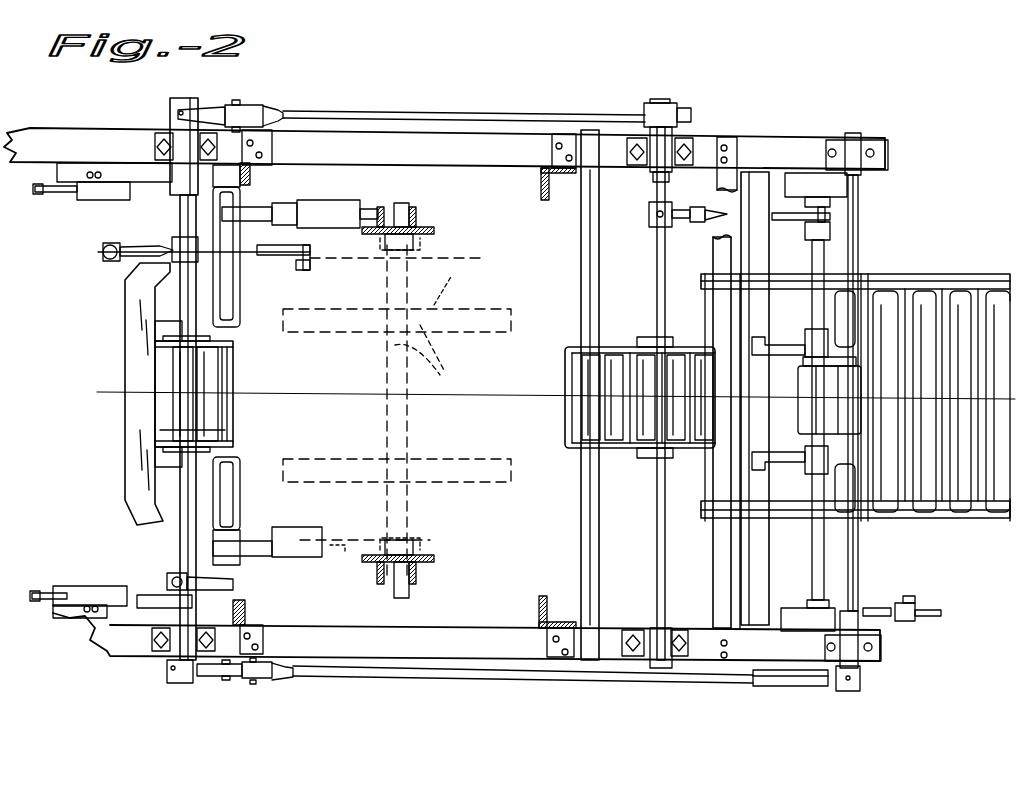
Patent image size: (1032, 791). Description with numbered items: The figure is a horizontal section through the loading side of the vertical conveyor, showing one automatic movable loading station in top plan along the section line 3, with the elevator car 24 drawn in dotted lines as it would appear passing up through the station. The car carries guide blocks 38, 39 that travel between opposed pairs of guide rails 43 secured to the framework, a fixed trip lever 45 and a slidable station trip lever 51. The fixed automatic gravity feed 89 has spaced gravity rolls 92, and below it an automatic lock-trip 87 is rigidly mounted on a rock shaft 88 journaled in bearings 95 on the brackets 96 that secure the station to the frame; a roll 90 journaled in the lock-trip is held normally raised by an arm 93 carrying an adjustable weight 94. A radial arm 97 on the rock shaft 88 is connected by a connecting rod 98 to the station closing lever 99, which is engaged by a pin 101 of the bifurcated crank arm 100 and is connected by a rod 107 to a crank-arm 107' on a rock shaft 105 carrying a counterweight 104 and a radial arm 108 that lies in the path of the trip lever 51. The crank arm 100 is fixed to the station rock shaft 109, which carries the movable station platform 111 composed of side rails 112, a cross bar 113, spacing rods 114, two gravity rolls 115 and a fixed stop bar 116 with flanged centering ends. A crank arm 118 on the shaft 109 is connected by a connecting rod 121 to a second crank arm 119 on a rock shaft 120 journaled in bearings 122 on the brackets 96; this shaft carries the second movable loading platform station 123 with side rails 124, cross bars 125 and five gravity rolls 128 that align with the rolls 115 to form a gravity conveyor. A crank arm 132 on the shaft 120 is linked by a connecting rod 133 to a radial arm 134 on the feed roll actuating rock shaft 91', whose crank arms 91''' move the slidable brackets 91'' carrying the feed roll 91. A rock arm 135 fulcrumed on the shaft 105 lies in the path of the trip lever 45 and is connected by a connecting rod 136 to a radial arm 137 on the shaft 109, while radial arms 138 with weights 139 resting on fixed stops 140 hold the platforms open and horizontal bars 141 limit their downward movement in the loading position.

The section line 3 is at (547, 394).
The elevator car 24 is at (432, 357).
The guide block 38 is at (422, 243).
The guide block 39 is at (422, 549).
The guide rails 43 is at (404, 222).
The fixed trip lever 45 is at (441, 290).
The station trip lever 51 is at (340, 552).
The automatic lock-trip 87 is at (855, 278).
The rock shaft 88 is at (856, 545).
The fixed automatic gravity feed 89 is at (920, 290).
The roll 90 is at (805, 397).
The feed roll 91 is at (816, 393).
The feed roll actuating rock shaft 91' is at (802, 435).
The slidable spaced brackets 91'' is at (778, 401).
The crank arms 91''' is at (800, 402).
The gravity rolls 92 is at (705, 492).
The arm 93 is at (930, 609).
The weight 94 is at (898, 603).
The bearings 95 is at (863, 132).
The brackets 96 is at (779, 140).
The radial arm 97 is at (840, 690).
The connecting rod 98 is at (622, 683).
The station closing lever 99 is at (255, 680).
The bifurcated crank arm 100 is at (178, 683).
The pin 101 is at (225, 680).
The counterweight 104 is at (323, 210).
The rock shaft 105 is at (240, 492).
The rod 107 is at (158, 577).
The crank-arm 107' is at (213, 588).
The radial arm 108 is at (290, 524).
The rock shaft 109 is at (180, 545).
The movable station platform 111 is at (185, 385).
The side rails 112 is at (212, 339).
The cross bar 113 is at (233, 412).
The spacing rods 114 is at (167, 414).
The gravity rolls 115 is at (200, 433).
The fixed stop bar 116 is at (125, 348).
The crank arm 118 is at (205, 112).
The second crank arm 119 is at (644, 103).
The rock shaft 120 is at (657, 276).
The connecting rod 121 is at (446, 111).
The bearings 122 is at (672, 148).
The second movable loading platform station 123 is at (610, 412).
The side rails 124 is at (626, 347).
The cross bars 125 is at (564, 384).
The gravity rolls 128 is at (690, 448).
The crank arm 132 is at (649, 212).
The connecting rod 133 is at (728, 211).
The radial arm 134 is at (805, 228).
The rock arm 135 is at (280, 247).
The connecting rod 136 is at (174, 255).
The radial arm 137 is at (103, 255).
The radial arms 138 is at (45, 193).
The weights 139 is at (98, 192).
The fixed stops 140 is at (65, 173).
The horizontal bars 141 is at (240, 282).